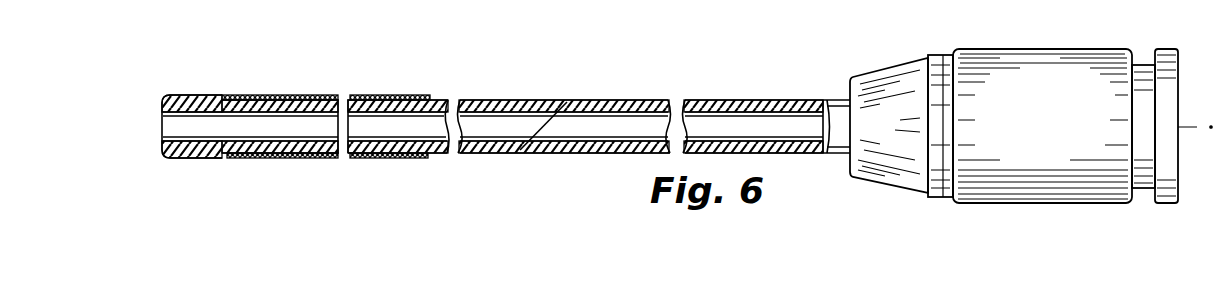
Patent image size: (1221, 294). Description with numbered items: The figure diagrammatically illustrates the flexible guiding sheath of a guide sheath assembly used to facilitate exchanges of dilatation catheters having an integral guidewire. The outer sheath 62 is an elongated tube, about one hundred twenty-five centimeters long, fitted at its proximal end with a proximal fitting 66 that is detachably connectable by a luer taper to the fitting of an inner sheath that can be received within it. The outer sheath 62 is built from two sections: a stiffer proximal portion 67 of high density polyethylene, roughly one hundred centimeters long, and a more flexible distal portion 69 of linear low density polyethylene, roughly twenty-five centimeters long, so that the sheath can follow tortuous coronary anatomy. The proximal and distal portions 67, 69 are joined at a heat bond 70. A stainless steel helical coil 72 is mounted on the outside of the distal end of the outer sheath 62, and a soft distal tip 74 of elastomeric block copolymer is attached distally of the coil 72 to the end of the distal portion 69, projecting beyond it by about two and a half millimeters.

The outer sheath 62 is at (697, 93).
The proximal fitting 66 is at (1035, 63).
The proximal portion 67 is at (610, 154).
The distal portion 69 is at (483, 152).
The heat bond 70 is at (540, 129).
The helical coil 72 is at (315, 98).
The soft distal tip 74 is at (172, 95).